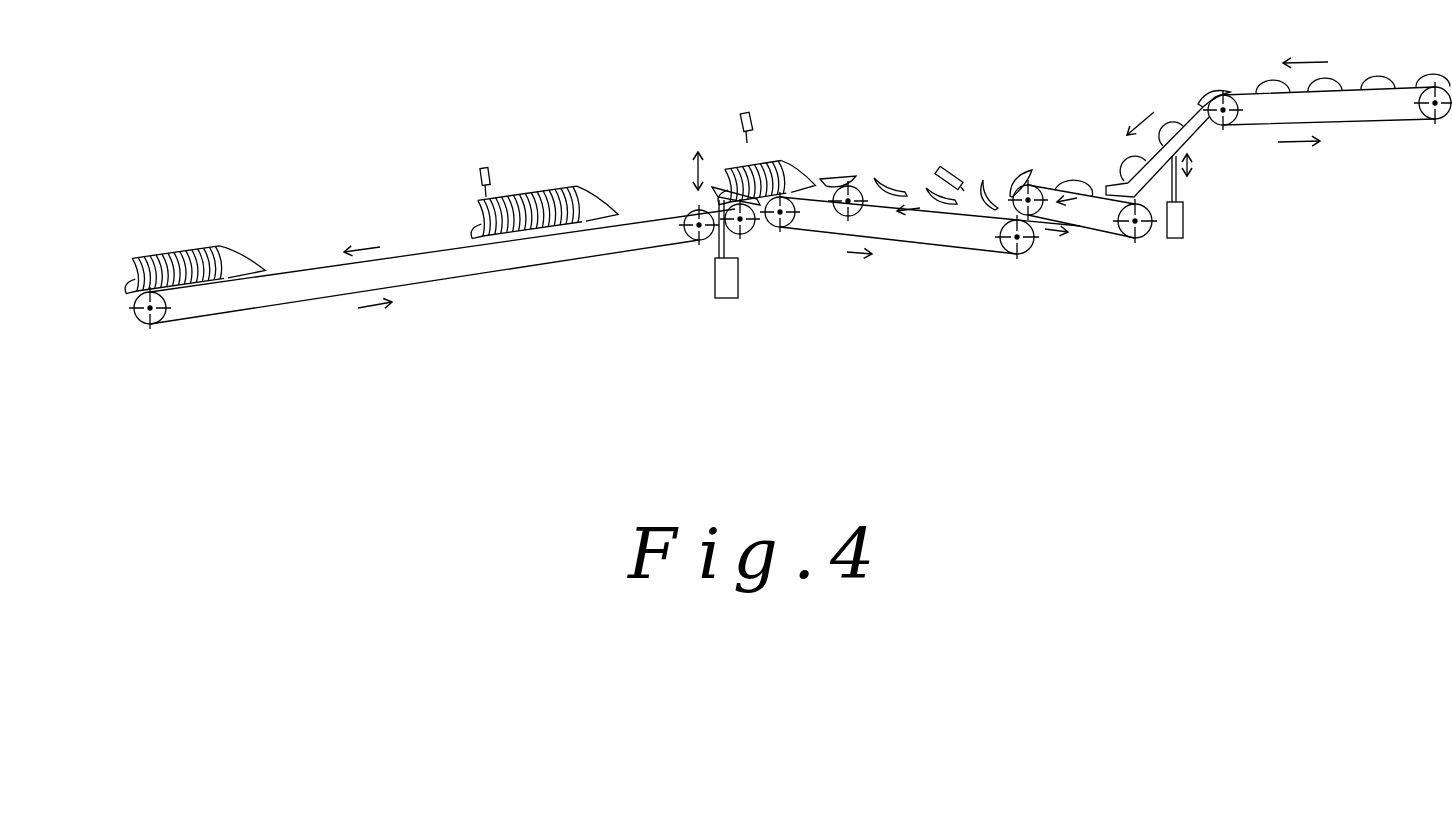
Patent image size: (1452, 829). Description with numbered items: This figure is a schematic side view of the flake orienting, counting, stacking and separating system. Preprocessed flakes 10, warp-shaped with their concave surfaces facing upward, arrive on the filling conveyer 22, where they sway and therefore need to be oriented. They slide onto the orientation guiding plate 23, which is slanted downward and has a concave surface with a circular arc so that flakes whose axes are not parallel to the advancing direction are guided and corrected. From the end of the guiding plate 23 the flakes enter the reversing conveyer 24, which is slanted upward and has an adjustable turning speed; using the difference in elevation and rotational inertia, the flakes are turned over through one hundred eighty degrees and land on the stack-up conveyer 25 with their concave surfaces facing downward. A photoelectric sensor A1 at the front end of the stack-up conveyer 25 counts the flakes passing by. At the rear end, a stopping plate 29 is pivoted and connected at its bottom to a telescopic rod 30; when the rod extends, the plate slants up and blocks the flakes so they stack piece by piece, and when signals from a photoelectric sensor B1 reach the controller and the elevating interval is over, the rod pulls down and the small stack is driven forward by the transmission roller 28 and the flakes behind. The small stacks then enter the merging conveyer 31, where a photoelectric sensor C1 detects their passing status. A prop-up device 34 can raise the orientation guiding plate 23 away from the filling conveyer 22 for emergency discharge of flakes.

The flakes 10 is at (1207, 93).
The filling conveyer 22 is at (1357, 113).
The orientation guiding plate 23 is at (1188, 141).
The reversing conveyer 24 is at (1088, 217).
The stack-up conveyer 25 is at (942, 233).
The transmission roller 28 is at (750, 232).
The stopping plate 29 is at (722, 197).
The telescopic rod 30 is at (717, 243).
The merging conveyer 31 is at (530, 255).
The prop-up device 34 is at (1177, 184).
The photoelectric sensor A1 is at (948, 165).
The photoelectric sensor B1 is at (750, 120).
The photoelectric sensor C1 is at (478, 178).